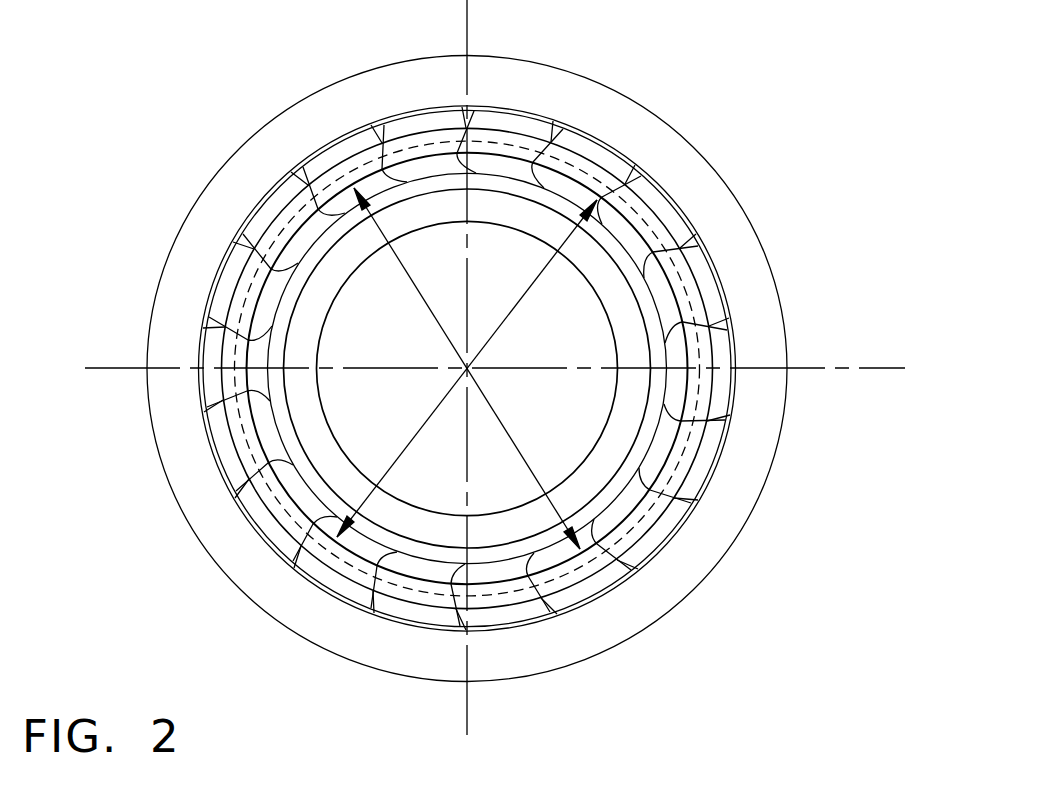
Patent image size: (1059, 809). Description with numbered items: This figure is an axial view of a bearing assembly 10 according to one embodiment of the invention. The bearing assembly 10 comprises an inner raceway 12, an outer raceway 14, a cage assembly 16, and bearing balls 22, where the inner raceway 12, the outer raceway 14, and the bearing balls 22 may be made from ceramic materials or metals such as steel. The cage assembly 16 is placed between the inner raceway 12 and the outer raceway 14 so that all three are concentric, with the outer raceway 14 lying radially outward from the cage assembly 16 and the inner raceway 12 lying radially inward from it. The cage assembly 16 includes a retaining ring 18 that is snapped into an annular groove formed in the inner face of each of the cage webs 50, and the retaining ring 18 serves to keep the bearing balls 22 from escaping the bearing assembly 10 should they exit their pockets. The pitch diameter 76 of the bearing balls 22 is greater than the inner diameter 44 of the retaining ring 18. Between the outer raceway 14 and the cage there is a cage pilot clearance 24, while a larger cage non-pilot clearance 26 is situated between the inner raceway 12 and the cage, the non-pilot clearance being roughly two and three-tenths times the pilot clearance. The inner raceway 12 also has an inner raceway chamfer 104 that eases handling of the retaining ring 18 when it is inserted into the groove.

The bearing assembly 10 is at (227, 89).
The inner raceway 12 is at (612, 318).
The outer raceway 14 is at (705, 185).
The cage assembly 16 is at (530, 125).
The retaining ring 18 is at (205, 302).
The bearing balls 22 is at (718, 388).
The cage pilot clearance 24 is at (245, 543).
The cage non-pilot clearance 26 is at (307, 230).
The inner diameter of the retaining ring 44 is at (405, 252).
The cage webs 50 is at (265, 210).
The pitch diameter of the bearing balls 76 is at (432, 413).
The inner raceway chamfer 104 is at (645, 432).